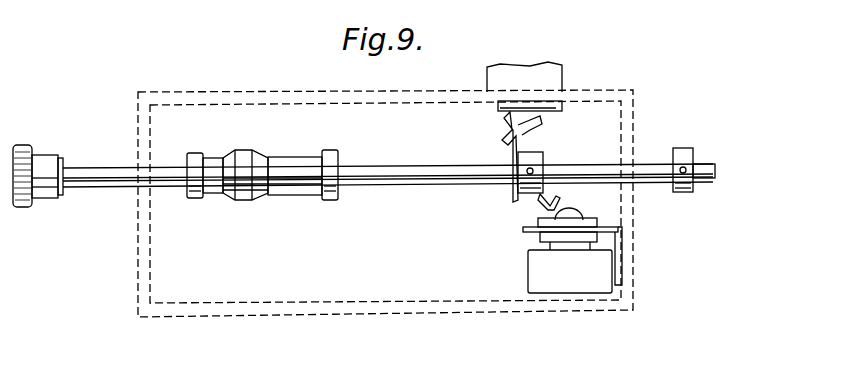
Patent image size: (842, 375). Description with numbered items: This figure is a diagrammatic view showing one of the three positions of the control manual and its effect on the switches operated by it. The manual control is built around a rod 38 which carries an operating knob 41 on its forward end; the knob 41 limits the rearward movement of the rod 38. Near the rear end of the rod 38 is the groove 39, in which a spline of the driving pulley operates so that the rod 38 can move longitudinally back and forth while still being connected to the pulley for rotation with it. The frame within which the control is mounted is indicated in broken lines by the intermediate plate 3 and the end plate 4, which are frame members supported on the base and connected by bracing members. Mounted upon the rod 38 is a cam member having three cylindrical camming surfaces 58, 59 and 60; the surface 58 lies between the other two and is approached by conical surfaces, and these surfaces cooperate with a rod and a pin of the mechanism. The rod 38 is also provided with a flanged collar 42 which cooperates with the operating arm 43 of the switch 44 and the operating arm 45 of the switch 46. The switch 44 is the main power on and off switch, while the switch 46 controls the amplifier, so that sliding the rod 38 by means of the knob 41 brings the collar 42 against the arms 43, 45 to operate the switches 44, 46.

The intermediate plate 3 is at (310, 92).
The end plate 4 is at (263, 311).
The rod 38 is at (372, 173).
The groove 39 is at (708, 167).
The operating knob 41 is at (48, 156).
The flanged collar 42 is at (511, 198).
The operating arm 43 is at (560, 203).
The switch 44 is at (598, 288).
The operating arm 45 is at (532, 128).
The switch 46 is at (552, 65).
The camming surface 58 is at (245, 153).
The camming surface 59 is at (213, 153).
The camming surface 60 is at (305, 160).